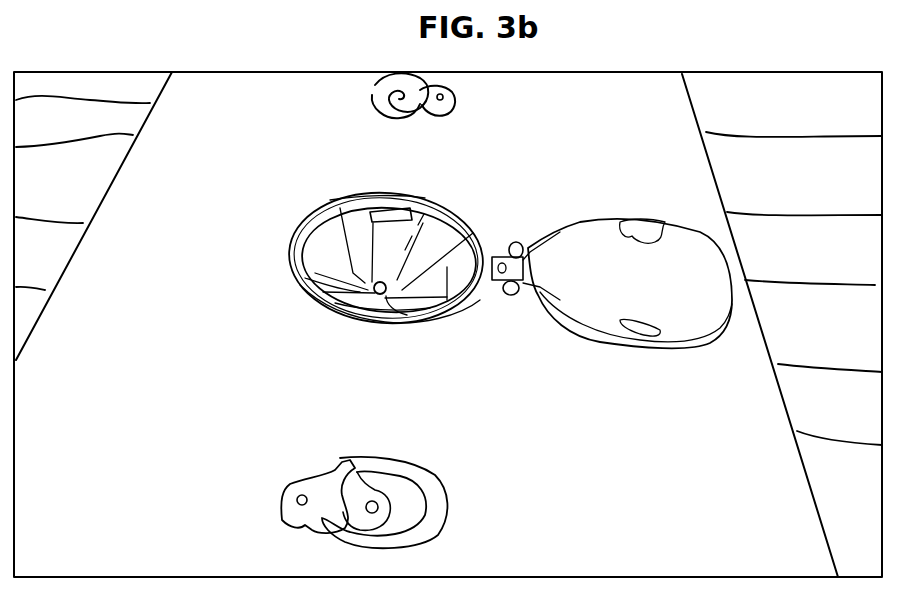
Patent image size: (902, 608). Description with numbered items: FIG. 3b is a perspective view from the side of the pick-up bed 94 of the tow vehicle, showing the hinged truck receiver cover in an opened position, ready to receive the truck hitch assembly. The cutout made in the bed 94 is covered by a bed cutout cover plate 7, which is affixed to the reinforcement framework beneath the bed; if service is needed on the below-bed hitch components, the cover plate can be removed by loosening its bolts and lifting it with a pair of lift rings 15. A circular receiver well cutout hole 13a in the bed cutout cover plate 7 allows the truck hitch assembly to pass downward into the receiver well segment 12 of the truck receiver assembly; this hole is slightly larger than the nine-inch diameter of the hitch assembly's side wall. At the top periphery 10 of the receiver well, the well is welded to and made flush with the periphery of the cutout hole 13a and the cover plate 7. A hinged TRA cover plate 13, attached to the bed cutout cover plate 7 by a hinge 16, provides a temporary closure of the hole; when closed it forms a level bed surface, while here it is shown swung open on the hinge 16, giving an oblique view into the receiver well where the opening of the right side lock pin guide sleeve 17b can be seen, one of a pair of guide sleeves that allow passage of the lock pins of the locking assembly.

The bed 94 is at (75, 178).
The bed cutout cover plate 7 is at (285, 209).
The top periphery of the receiver well 10 is at (300, 240).
The receiver well segment 12 is at (447, 273).
The circular receiver well cutout hole 13a is at (330, 300).
The right side lock pin guide sleeve 17b is at (418, 203).
The hinged TRA cover plate 13 is at (610, 270).
The hinge 16 is at (502, 292).
The lift rings 15 is at (420, 114).